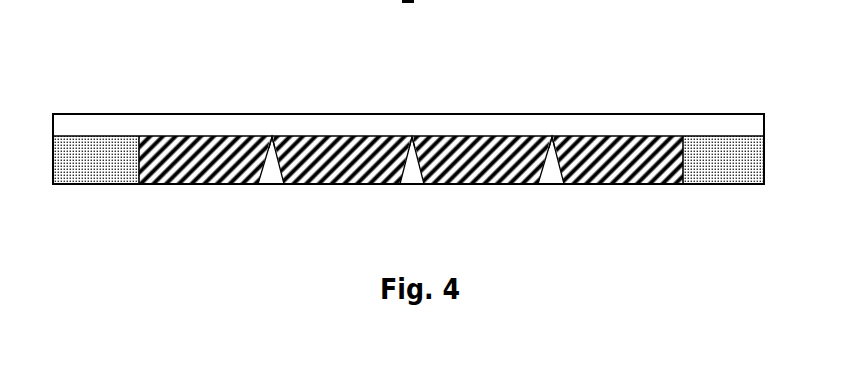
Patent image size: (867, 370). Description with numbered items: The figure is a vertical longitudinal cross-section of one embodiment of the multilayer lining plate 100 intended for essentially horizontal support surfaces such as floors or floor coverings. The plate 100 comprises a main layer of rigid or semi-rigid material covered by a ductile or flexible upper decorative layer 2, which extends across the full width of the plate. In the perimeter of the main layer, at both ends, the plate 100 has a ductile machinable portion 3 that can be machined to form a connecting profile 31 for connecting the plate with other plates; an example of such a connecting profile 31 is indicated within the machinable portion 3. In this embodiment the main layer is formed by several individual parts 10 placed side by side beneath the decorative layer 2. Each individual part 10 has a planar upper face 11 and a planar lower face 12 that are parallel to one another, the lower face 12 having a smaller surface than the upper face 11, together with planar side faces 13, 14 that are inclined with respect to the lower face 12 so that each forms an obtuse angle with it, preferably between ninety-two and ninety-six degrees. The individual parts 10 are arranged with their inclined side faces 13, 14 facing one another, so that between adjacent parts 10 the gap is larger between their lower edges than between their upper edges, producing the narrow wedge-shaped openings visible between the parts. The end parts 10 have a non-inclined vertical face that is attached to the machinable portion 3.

The multilayer lining plate 100 is at (408, 131).
The upper decorative layer 2 is at (303, 118).
The machinable portion 3 is at (408, 148).
The connecting profile 31 is at (72, 150).
The upper face 11 is at (421, 157).
The individual part 10 is at (168, 157).
The lower face 12 is at (459, 185).
The side face 13 is at (410, 168).
The side face 14 is at (272, 142).